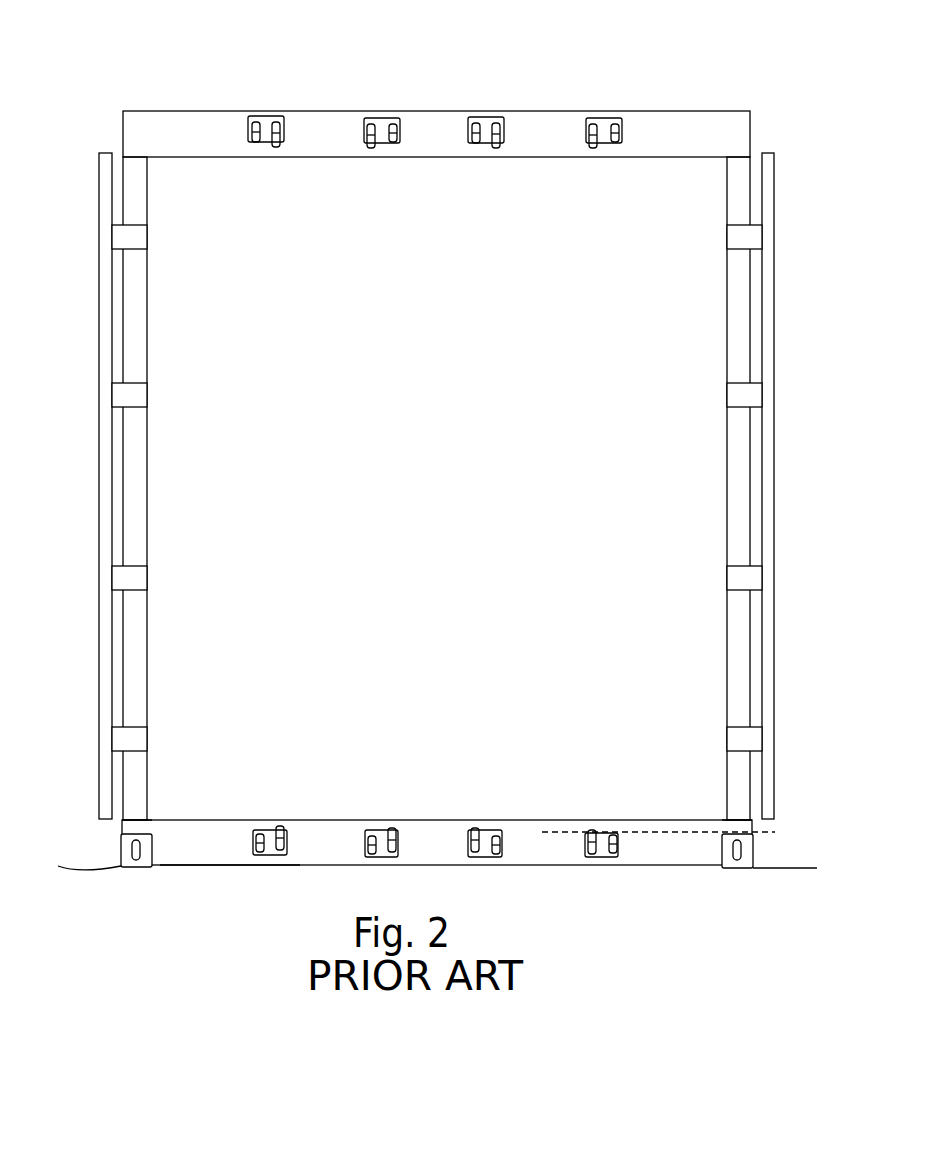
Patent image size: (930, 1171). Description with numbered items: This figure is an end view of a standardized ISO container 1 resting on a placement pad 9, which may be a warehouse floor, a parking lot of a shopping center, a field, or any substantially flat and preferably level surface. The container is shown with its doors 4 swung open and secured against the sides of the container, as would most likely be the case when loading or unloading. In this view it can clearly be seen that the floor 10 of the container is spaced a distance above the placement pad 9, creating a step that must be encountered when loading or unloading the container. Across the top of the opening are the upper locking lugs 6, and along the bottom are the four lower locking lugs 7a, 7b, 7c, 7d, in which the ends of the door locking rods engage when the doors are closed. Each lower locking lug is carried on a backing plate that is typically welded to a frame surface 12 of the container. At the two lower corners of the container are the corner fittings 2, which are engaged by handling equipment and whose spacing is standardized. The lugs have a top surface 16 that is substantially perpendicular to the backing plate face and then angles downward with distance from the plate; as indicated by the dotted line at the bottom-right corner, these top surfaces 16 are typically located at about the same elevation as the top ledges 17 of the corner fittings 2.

The standardized container 1 is at (527, 93).
The corner fitting 2 is at (130, 868).
The doors 4 is at (102, 669).
The upper locking lugs 6 is at (265, 143).
The lower locking lug 7a is at (268, 832).
The lower locking lug 7b is at (387, 830).
The lower locking lug 7c is at (488, 830).
The lower locking lug 7d is at (603, 833).
The placement pad 9 is at (63, 857).
The floor 10 is at (317, 819).
The frame surface 12 is at (230, 858).
The top surface 16 is at (592, 832).
The top ledges 17 is at (136, 833).